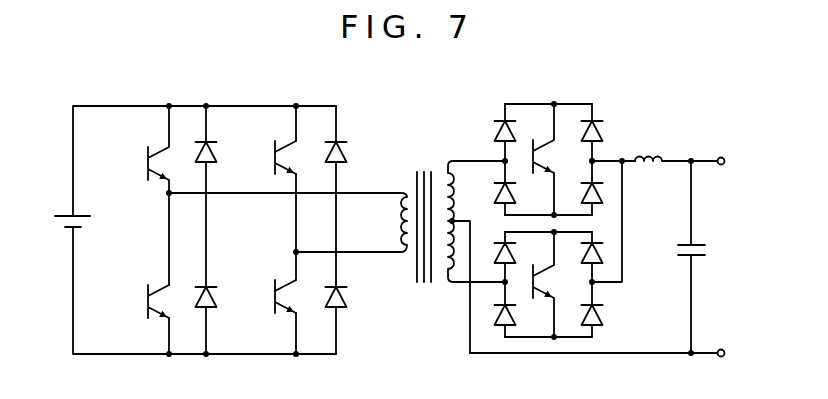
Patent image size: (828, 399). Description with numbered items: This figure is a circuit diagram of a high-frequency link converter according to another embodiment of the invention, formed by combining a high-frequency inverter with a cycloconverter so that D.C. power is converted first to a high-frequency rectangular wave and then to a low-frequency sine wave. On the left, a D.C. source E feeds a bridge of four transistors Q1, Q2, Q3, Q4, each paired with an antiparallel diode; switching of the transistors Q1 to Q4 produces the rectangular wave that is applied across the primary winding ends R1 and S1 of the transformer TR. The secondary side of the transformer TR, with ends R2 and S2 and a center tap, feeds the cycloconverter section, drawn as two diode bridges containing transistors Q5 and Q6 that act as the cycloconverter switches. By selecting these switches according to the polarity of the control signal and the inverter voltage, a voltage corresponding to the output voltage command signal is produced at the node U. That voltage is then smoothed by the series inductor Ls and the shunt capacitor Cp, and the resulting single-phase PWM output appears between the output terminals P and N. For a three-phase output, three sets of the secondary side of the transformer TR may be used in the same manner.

The DC power source E is at (68, 211).
The transistor Q1 is at (168, 149).
The transistor Q2 is at (168, 301).
The transistor Q3 is at (297, 157).
The transistor Q4 is at (293, 296).
The transformer TR is at (421, 216).
The primary winding terminal R1 is at (288, 211).
The primary winding terminal S1 is at (387, 273).
The secondary winding terminal R2 is at (476, 245).
The secondary winding terminal S2 is at (448, 299).
The transistor Q5 is at (555, 159).
The transistor Q6 is at (555, 284).
The output node U is at (613, 208).
The smoothing inductor Ls is at (663, 147).
The smoothing capacitor Cp is at (703, 257).
The output terminal P is at (715, 159).
The output terminal N is at (605, 353).